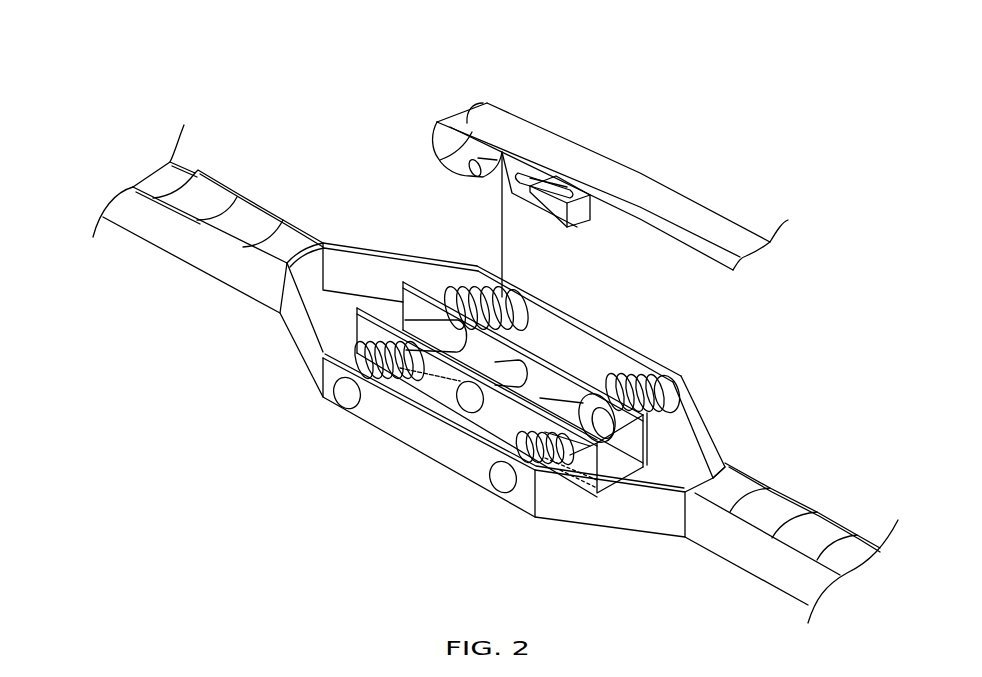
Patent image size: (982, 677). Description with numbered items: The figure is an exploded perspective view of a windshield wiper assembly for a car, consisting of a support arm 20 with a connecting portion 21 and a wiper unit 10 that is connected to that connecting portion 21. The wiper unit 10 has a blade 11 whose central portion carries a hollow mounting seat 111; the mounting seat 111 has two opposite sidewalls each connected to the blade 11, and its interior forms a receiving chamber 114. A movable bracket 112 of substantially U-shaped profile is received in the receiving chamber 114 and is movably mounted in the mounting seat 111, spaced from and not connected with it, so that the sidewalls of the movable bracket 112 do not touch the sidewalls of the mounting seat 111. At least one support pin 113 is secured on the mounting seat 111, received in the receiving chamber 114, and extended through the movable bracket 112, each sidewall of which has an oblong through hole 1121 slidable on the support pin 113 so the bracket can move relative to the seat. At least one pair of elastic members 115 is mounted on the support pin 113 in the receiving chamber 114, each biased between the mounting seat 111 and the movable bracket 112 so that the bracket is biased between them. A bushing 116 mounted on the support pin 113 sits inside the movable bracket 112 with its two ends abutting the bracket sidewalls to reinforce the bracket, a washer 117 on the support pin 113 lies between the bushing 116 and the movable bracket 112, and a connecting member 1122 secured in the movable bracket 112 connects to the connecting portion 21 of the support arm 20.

The wiper unit 10 is at (806, 452).
The blade 11 is at (250, 272).
The mounting seat 111 is at (407, 420).
The movable bracket 112 is at (413, 313).
The through hole 1121 is at (440, 313).
The connecting member 1122 is at (597, 370).
The support pin 113 is at (490, 283).
The receiving chamber 114 is at (600, 367).
The elastic member 115 is at (560, 303).
The bushing 116 is at (597, 427).
The washer 117 is at (657, 407).
The support arm 20 is at (561, 144).
The connecting portion 21 is at (455, 148).